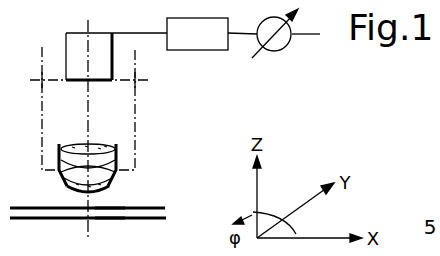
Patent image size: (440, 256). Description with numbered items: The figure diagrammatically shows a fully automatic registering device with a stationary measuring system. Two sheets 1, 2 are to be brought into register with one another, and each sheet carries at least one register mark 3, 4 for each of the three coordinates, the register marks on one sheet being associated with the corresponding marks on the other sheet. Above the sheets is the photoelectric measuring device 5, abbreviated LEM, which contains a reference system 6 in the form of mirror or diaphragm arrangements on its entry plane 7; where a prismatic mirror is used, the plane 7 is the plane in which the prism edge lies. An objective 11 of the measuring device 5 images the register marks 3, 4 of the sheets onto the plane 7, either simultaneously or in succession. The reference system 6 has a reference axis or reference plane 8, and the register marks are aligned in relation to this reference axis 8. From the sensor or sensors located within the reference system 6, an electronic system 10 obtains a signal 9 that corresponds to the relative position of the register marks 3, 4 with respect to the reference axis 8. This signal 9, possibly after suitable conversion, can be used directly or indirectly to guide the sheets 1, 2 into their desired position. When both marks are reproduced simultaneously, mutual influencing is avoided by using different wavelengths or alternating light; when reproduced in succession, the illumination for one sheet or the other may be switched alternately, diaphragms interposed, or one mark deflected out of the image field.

The sheet 1 is at (164, 219).
The sheet 2 is at (160, 207).
The register mark 3 is at (105, 219).
The register mark 4 is at (100, 207).
The photoelectric measuring device 5 is at (42, 107).
The reference system 6 is at (70, 52).
The entry plane 7 is at (95, 82).
The reference axis or reference plane 8 is at (88, 115).
The signal 9 is at (283, 48).
The electronic system 10 is at (197, 42).
The objective 11 is at (118, 152).